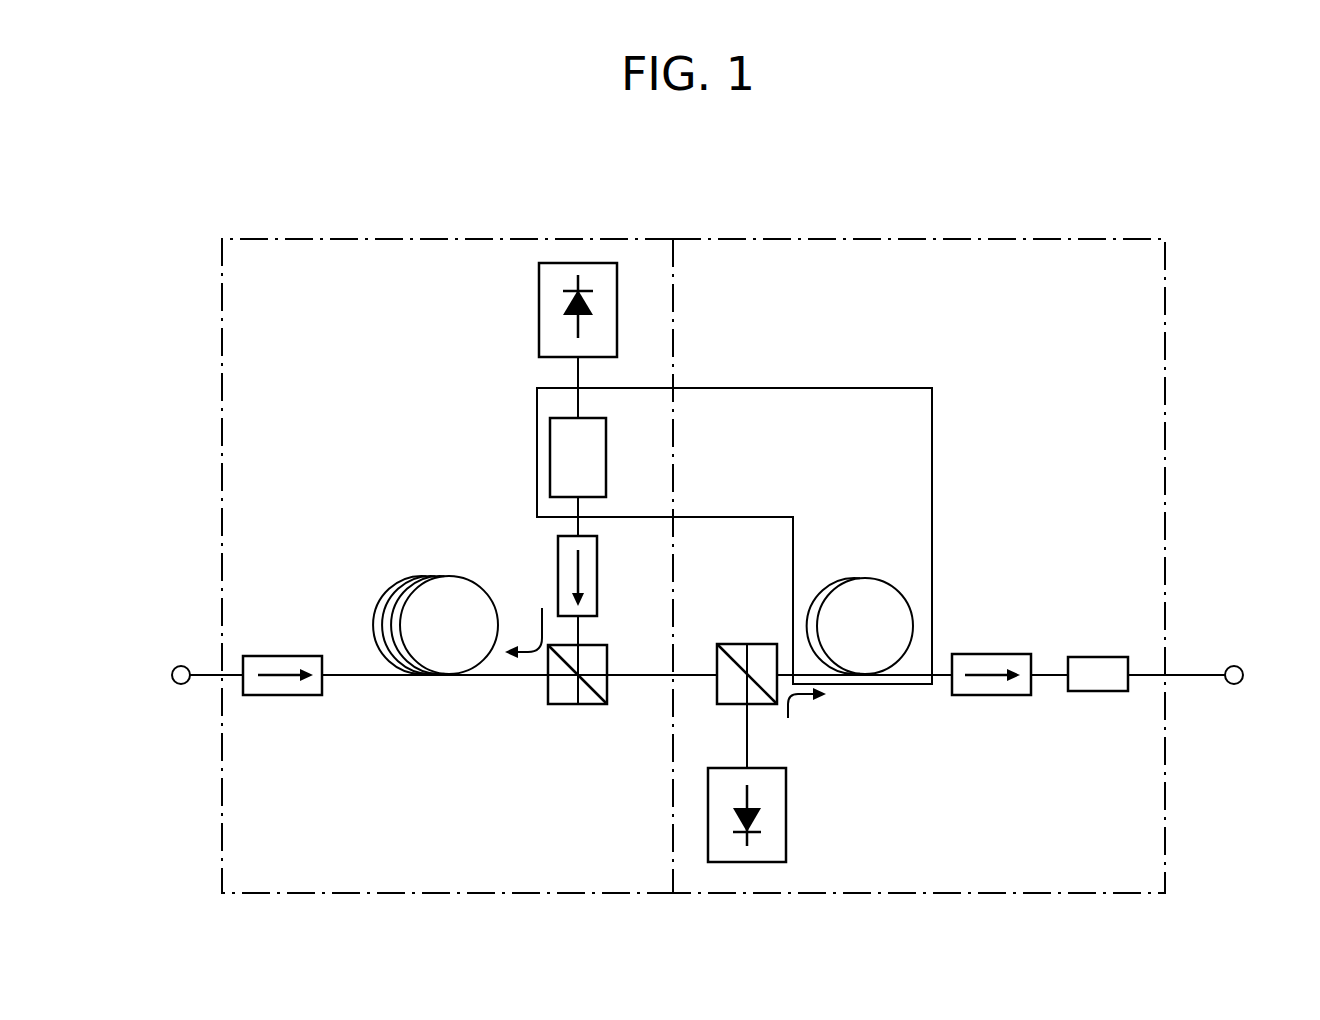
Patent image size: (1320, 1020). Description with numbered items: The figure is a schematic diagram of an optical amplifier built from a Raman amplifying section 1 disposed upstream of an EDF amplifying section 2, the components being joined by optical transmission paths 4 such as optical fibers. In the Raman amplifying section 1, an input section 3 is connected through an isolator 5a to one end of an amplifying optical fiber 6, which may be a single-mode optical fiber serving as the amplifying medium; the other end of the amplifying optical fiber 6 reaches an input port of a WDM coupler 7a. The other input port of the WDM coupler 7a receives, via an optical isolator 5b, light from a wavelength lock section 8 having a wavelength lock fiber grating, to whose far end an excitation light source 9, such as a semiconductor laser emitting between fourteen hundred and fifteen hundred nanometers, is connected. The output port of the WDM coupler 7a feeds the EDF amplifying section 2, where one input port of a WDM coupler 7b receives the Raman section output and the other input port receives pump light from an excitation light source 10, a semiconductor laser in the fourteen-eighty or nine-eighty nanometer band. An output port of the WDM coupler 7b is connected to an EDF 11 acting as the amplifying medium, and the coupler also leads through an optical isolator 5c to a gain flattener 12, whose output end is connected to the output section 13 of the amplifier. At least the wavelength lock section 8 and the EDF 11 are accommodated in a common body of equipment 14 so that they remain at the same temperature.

The Raman amplifying section 1 is at (452, 238).
The EDF amplifying section 2 is at (940, 238).
The input section 3 is at (181, 665).
The optical transmission paths 4 is at (200, 678).
The isolator 5a is at (282, 655).
The optical isolator 5b is at (598, 575).
The optical isolator 5c is at (990, 654).
The amplifying optical fiber 6 is at (452, 576).
The WDM coupler 7a is at (578, 706).
The WDM coupler 7b is at (750, 644).
The wavelength lock section 8 is at (550, 448).
The excitation light source 9 is at (539, 298).
The excitation light source 10 is at (786, 813).
The EDF 11 is at (865, 578).
The gain flattener 12 is at (1098, 657).
The output section 13 is at (1234, 665).
The body of equipment 14 is at (933, 437).